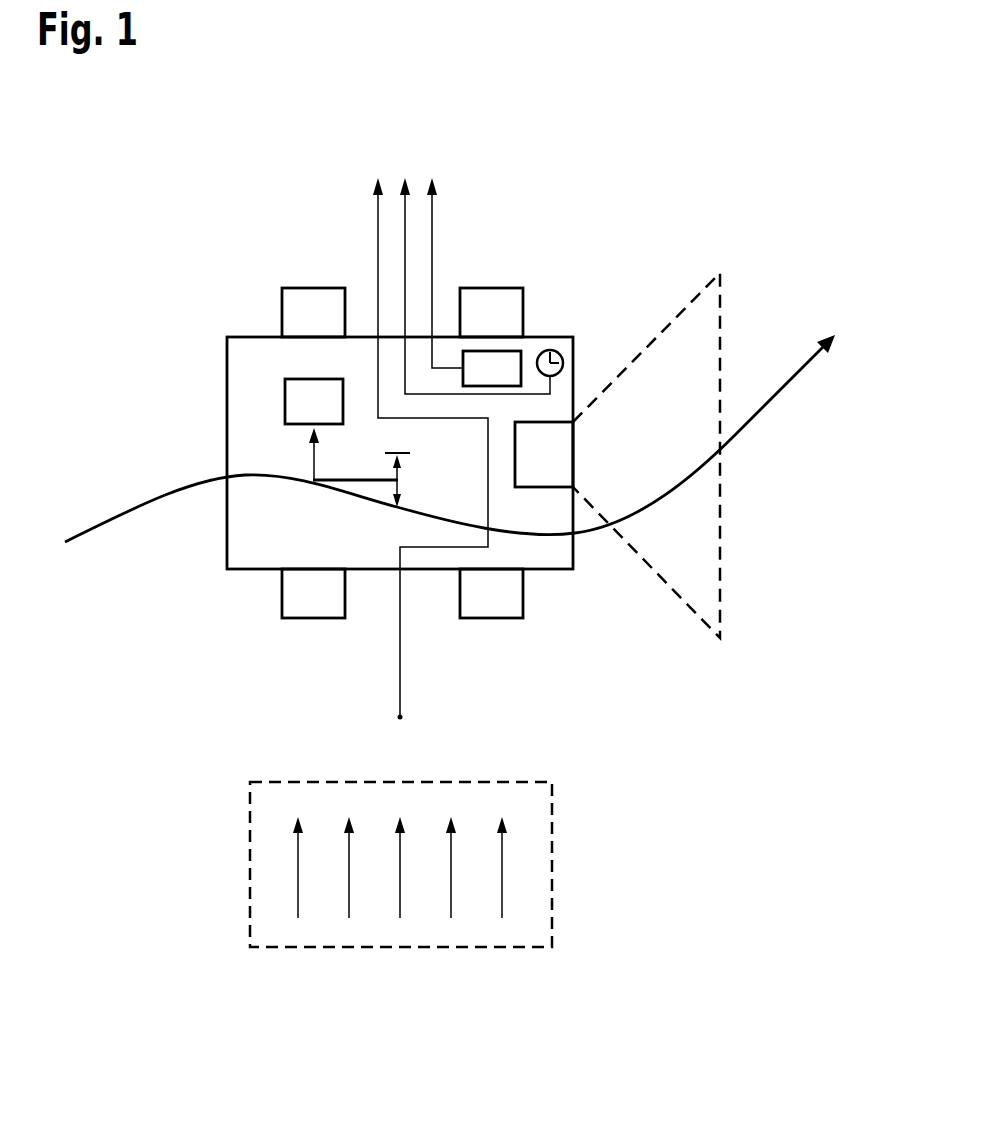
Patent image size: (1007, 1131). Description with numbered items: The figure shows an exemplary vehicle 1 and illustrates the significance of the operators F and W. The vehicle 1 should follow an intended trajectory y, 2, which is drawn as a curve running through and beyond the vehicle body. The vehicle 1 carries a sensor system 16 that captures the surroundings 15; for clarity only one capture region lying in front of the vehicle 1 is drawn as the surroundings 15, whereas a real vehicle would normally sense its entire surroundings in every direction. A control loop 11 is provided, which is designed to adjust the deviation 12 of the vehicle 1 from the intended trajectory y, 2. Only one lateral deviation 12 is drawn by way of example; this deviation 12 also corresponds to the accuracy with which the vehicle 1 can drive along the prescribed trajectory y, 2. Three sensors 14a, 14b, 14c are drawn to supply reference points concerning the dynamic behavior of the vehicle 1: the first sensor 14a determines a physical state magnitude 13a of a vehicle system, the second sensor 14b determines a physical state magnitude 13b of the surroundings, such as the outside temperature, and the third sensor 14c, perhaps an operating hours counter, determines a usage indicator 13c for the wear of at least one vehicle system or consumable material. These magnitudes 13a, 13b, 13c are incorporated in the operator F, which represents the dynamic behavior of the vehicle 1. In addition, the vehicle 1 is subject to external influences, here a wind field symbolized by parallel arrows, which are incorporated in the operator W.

The vehicle 1 is at (227, 397).
The control loop 11 is at (333, 416).
The deviation 12 is at (315, 481).
The physical state magnitude of a vehicle system 13a is at (432, 236).
The physical state magnitude of the surroundings 13b is at (378, 213).
The usage indicator 13c is at (405, 266).
The first sensor 14a is at (521, 358).
The second sensor 14b is at (400, 717).
The third sensor 14c is at (560, 350).
The surroundings 15 is at (667, 322).
The sensor system 16 is at (573, 450).
The intended trajectory 2 is at (745, 423).
The operator W is at (552, 860).
The operator F is at (414, 167).